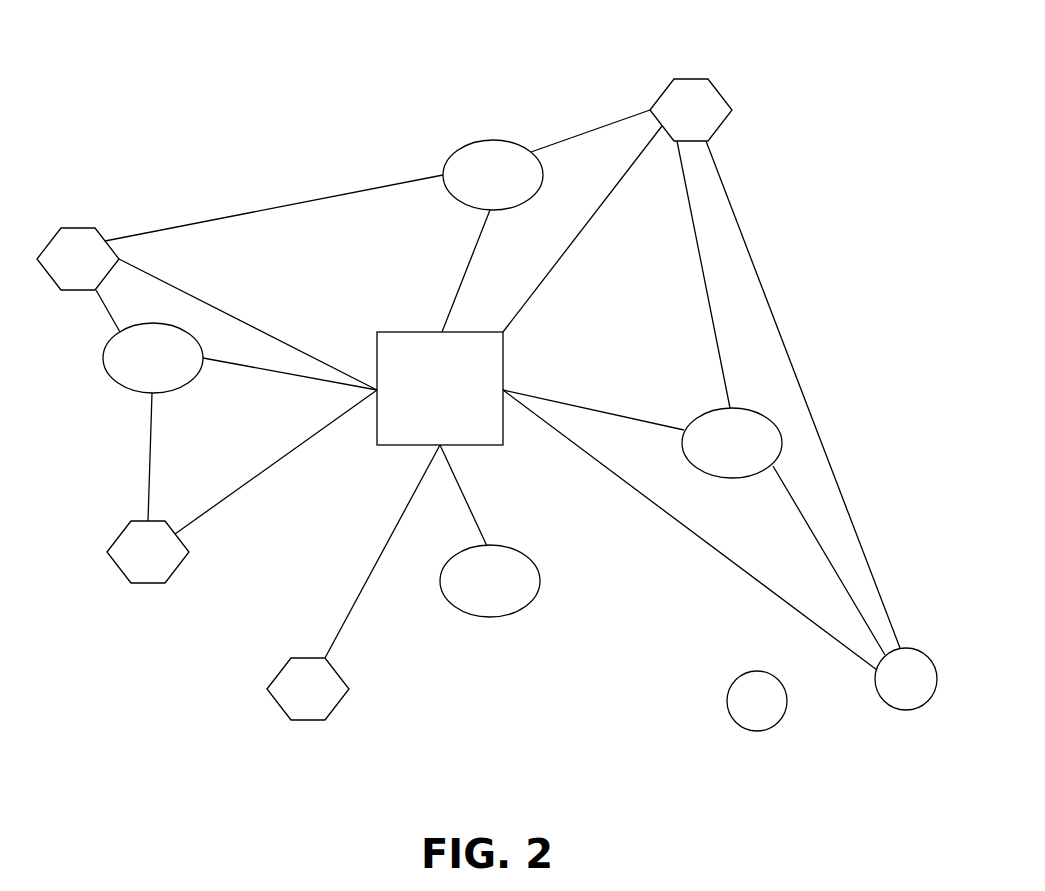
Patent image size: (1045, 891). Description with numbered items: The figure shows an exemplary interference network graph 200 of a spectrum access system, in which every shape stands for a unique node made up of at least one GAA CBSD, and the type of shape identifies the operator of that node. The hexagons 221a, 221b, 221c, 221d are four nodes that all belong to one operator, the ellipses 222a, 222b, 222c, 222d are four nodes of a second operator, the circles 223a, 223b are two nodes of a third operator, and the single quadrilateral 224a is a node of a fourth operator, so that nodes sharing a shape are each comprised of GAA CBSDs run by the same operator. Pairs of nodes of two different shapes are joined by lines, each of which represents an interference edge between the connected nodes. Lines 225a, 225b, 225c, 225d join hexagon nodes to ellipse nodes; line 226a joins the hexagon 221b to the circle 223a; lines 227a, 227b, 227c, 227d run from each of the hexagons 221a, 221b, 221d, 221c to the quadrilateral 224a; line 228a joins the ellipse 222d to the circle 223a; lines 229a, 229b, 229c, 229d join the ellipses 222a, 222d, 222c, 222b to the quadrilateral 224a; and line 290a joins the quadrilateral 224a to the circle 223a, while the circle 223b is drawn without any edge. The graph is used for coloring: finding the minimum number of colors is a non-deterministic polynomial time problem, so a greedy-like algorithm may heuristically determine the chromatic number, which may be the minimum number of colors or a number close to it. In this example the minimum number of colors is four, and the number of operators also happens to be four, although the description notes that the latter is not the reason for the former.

The network topology 200 is at (471, 25).
The hexagon 221a is at (55, 271).
The hexagon 221b is at (668, 122).
The hexagon 221c is at (125, 564).
The hexagon 221d is at (285, 701).
The ellipse 222a is at (130, 370).
The ellipse 222b is at (470, 187).
The ellipse 222c is at (467, 593).
The ellipse 222d is at (709, 455).
The circle 223a is at (883, 691).
The circle 223b is at (734, 713).
The quadrilateral 224a is at (417, 399).
The interference edge line 225a is at (208, 218).
The interference edge line 225b is at (540, 143).
The interference edge line 225c is at (95, 302).
The interference edge line 225d is at (147, 473).
The interference edge line 226a is at (820, 440).
The interference edge line 227a is at (285, 340).
The interference edge line 227b is at (575, 242).
The interference edge line 227c is at (382, 553).
The interference edge line 227d is at (270, 470).
The interference edge line 228a is at (798, 510).
The interference edge line 229a is at (282, 375).
The interference edge line 229b is at (648, 413).
The interference edge line 229c is at (475, 512).
The interference edge line 229d is at (453, 302).
The interference edge line 290a is at (615, 478).